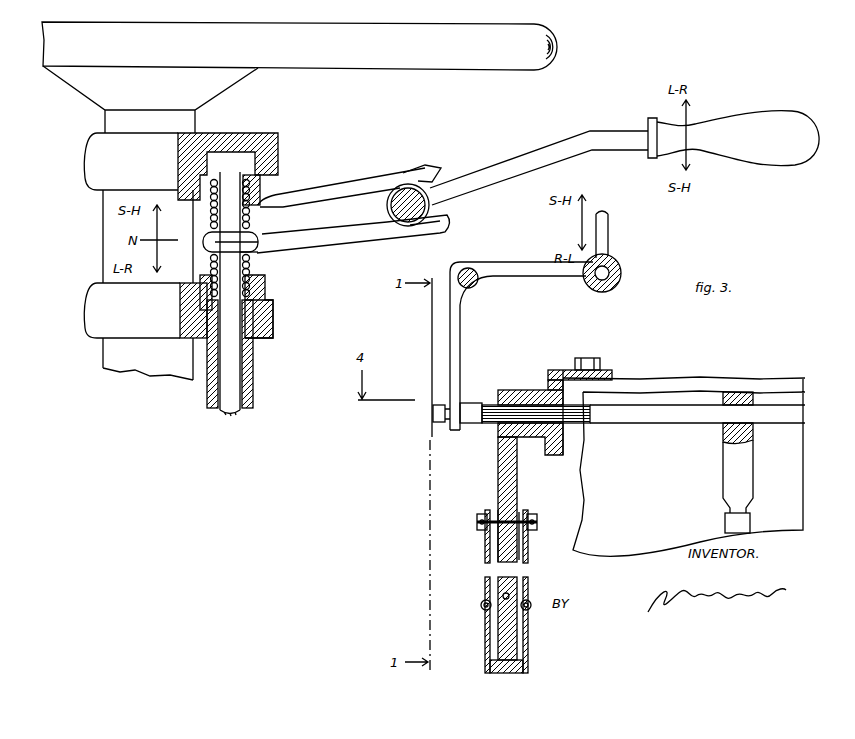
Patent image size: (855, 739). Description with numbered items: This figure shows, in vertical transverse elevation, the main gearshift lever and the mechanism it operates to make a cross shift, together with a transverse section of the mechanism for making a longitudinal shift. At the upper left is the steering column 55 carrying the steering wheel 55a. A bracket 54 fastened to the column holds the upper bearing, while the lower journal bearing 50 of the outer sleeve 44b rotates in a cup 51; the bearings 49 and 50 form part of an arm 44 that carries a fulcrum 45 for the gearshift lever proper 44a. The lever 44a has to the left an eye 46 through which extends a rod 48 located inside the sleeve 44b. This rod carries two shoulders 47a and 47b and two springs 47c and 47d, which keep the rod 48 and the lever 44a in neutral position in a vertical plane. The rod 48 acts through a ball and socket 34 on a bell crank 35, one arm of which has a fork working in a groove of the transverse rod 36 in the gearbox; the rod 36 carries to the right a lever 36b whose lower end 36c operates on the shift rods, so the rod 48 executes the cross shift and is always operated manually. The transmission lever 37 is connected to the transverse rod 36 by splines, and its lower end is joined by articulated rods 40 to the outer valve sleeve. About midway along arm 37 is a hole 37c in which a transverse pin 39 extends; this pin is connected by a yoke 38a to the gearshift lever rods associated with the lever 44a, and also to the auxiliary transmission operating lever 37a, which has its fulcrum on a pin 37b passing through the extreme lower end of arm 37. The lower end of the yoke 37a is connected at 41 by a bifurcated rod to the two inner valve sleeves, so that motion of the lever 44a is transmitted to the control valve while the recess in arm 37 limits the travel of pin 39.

The steering wheel 55a is at (303, 31).
The steering column 55 is at (190, 118).
The bracket 54 is at (272, 141).
The journal bearing 49 is at (270, 186).
The rod 48 is at (227, 180).
The shoulder 47a is at (258, 237).
The shoulder 47b is at (252, 256).
The spring 47c is at (209, 216).
The spring 47d is at (209, 268).
The eye 46 is at (276, 250).
The journal bearing 50 is at (274, 300).
The cup 51 is at (274, 331).
The outer sleeve 44b is at (253, 392).
The arm 44 is at (416, 169).
The gearshift lever 44a is at (341, 220).
The fulcrum 45 is at (432, 205).
The bell crank 35 is at (527, 268).
The ball and socket 34 is at (622, 273).
The transverse rod 36 is at (619, 413).
The lever 36b is at (748, 464).
The lower end of lever 36c is at (752, 522).
The transmission lever 37 is at (497, 445).
The auxiliary transmission operating lever 37a is at (486, 542).
The fulcrum pin 37b is at (490, 664).
The hole 37c is at (522, 515).
The yoke 38a is at (480, 522).
The transverse pin 39 is at (497, 512).
The articulated rods 40 is at (503, 596).
The rod 41 is at (483, 608).